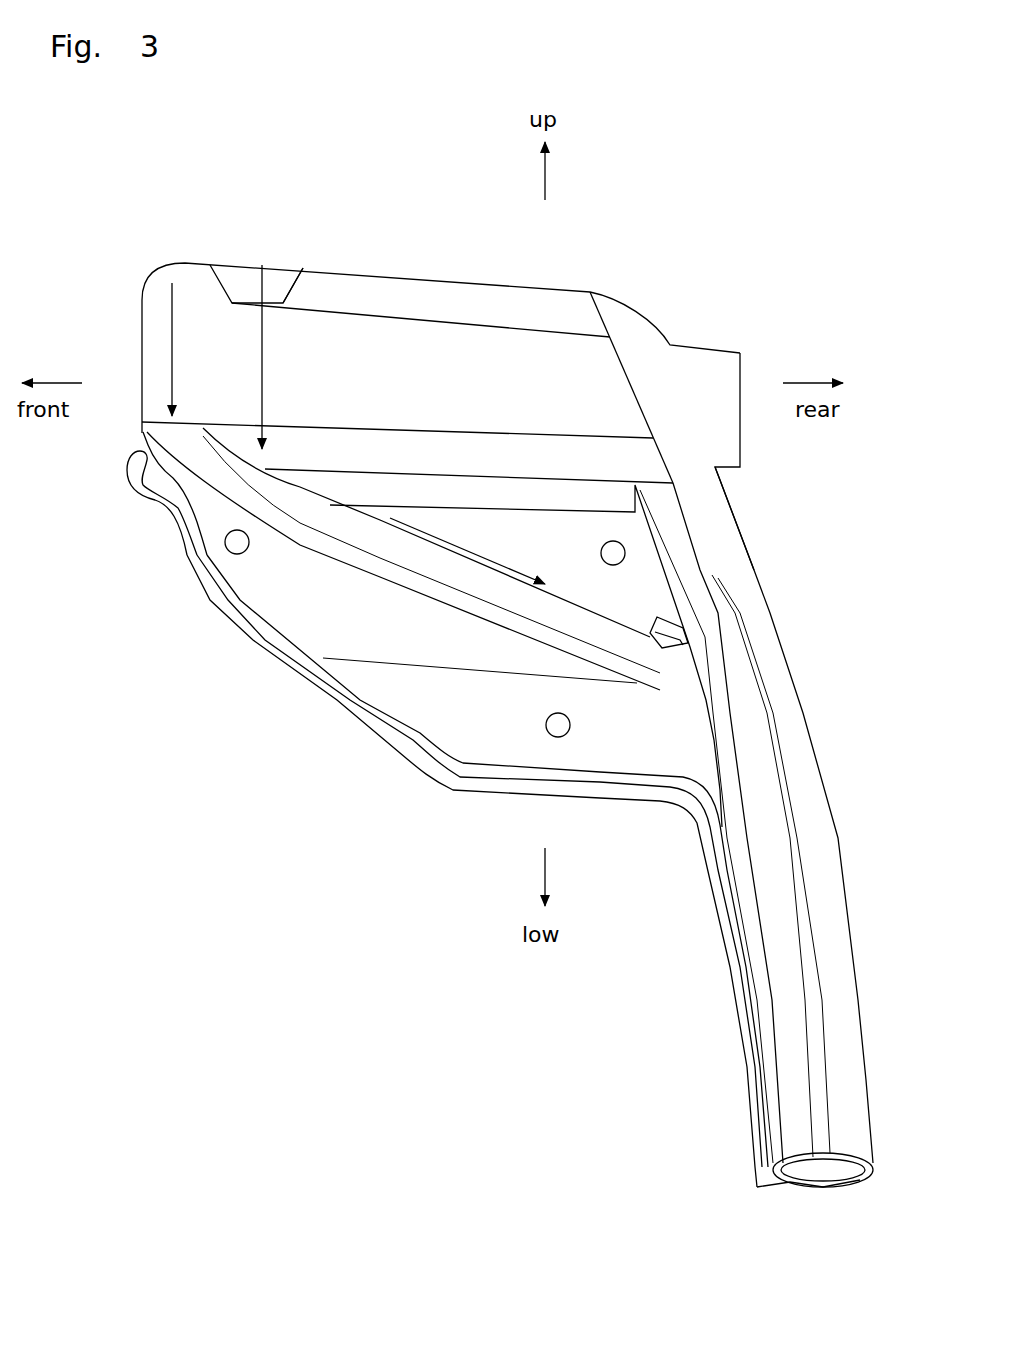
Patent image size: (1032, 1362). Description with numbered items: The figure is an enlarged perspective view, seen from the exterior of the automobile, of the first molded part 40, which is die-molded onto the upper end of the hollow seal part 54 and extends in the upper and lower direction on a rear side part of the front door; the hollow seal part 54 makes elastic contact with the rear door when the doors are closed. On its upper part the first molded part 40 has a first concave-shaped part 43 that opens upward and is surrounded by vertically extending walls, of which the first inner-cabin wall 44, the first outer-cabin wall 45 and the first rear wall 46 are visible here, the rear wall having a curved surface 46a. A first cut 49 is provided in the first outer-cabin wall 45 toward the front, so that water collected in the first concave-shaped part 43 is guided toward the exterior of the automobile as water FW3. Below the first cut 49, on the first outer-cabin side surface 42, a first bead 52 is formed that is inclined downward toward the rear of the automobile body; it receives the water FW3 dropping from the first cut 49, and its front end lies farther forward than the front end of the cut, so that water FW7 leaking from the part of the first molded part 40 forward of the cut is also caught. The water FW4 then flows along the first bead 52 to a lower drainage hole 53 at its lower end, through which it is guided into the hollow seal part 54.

The first molded part 40 is at (741, 198).
The first outer-cabin side surface 42 is at (143, 433).
The first concave-shaped part 43 is at (262, 258).
The first inner-cabin wall 44 is at (240, 278).
The first outer-cabin wall 45 is at (392, 272).
The first rear wall 46 is at (640, 312).
The curved surface 46a is at (611, 291).
The first cut 49 is at (285, 282).
The first bead 52 is at (207, 487).
The lower drainage hole 53 is at (680, 643).
The hollow seal part 54 is at (835, 930).
The water FW3 is at (258, 342).
The water FW4 is at (430, 538).
The water FW7 is at (170, 333).